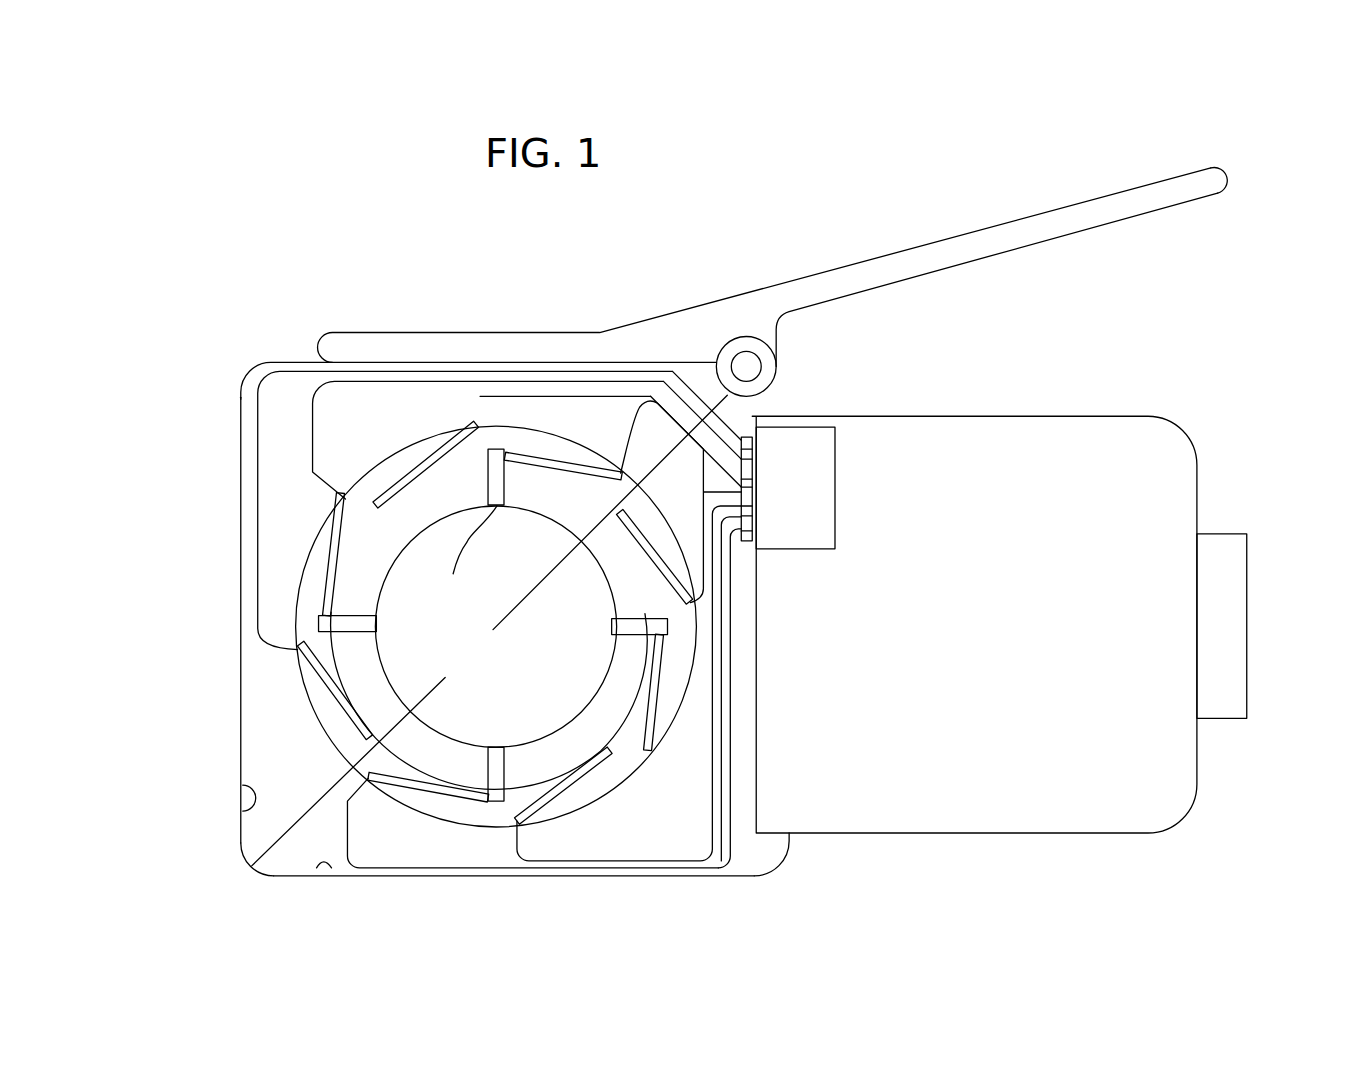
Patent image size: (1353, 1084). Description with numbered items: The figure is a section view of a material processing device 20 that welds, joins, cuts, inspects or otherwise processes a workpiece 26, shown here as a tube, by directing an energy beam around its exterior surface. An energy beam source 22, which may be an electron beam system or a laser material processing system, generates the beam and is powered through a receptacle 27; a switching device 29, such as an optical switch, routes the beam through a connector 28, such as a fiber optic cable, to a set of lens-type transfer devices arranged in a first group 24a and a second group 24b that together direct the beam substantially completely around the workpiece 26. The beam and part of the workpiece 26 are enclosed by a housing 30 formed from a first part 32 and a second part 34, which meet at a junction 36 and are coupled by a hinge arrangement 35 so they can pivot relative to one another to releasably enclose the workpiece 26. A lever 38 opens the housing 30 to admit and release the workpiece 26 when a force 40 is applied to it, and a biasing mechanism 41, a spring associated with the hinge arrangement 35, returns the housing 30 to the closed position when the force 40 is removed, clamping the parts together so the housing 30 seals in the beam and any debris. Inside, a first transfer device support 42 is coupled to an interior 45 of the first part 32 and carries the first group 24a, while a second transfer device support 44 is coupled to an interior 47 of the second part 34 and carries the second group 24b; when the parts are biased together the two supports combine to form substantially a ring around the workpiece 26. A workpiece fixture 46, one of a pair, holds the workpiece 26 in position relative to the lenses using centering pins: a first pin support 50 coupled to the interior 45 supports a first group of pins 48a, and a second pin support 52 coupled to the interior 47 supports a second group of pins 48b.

The material processing device 20 is at (752, 247).
The energy beam source 22 is at (1160, 447).
The first group of energy transfer devices 24a is at (530, 450).
The second group of energy transfer devices 24b is at (470, 798).
The workpiece 26 is at (342, 699).
The receptacle 27 is at (1222, 553).
The connector 28 is at (255, 400).
The switching device 29 is at (816, 484).
The housing 30 is at (273, 360).
The first part 32 is at (240, 837).
The second part 34 is at (267, 877).
The hinge arrangement 35 is at (757, 362).
The junction 36 is at (293, 877).
The lever 38 is at (1003, 232).
The force 40 is at (1161, 179).
The biasing mechanism 41 is at (778, 375).
The first transfer device support 42 is at (300, 605).
The second transfer device support 44 is at (596, 780).
The interior of the first part 45 is at (242, 787).
The workpiece fixture 46 is at (374, 504).
The interior of the second part 47 is at (331, 872).
The first group of pins 48a is at (377, 622).
The second group of pins 48b is at (612, 636).
The first pin support 50 is at (377, 710).
The second pin support 52 is at (468, 773).